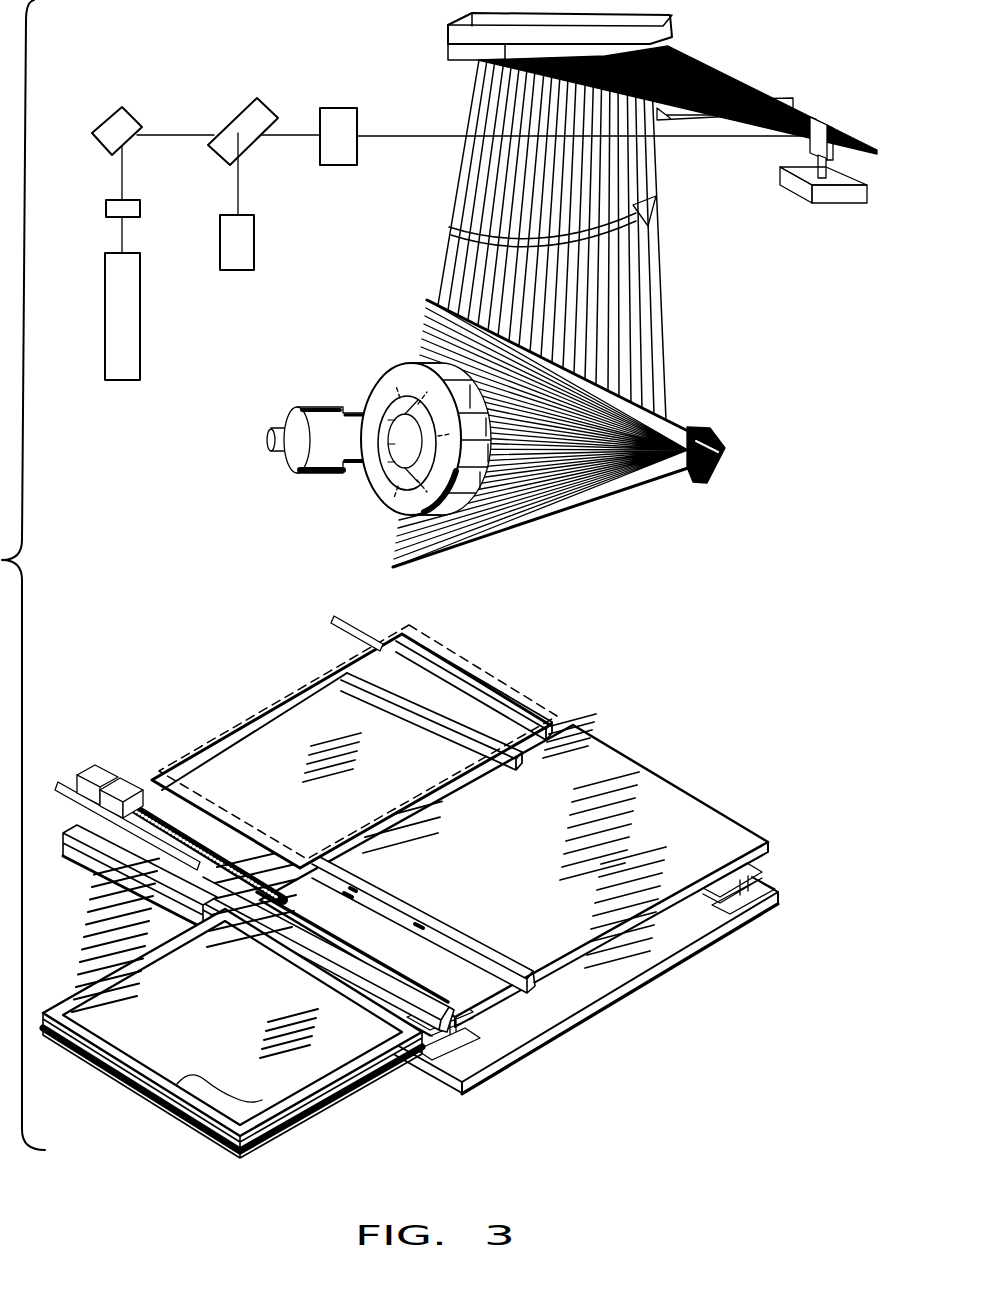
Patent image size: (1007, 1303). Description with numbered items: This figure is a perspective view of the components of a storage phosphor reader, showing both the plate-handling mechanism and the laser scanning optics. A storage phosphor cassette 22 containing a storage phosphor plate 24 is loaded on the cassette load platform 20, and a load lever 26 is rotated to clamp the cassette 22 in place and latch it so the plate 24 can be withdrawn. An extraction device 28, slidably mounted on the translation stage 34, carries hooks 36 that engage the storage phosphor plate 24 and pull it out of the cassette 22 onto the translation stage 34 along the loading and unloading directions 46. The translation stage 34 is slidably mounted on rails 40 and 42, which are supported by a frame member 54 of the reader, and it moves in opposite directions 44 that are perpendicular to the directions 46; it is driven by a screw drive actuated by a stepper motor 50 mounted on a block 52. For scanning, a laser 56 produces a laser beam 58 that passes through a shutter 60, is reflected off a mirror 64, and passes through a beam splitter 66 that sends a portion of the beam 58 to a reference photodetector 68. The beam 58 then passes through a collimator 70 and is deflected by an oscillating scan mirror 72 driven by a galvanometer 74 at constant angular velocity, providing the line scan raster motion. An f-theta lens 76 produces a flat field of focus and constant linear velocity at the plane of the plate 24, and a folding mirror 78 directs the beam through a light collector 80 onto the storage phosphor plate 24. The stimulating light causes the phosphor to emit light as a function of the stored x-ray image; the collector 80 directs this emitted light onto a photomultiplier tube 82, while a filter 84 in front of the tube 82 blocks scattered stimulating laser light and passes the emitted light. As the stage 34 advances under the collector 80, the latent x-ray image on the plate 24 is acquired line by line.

The cassette load platform 20 is at (347, 1075).
The storage phosphor cassette 22 is at (68, 996).
The storage phosphor plate 24 is at (222, 1085).
The load lever 26 is at (333, 968).
The extraction device 28 is at (489, 938).
The translation stage 34 is at (673, 782).
The hooks 36 is at (350, 897).
The rail 40 is at (372, 640).
The rail 42 is at (57, 800).
The directions of stage movement 44 is at (620, 687).
The directions of loading and unloading 46 is at (267, 880).
The stepper motor 50 is at (92, 768).
The block 52 is at (140, 778).
The frame member 54 is at (745, 925).
The laser 56 is at (105, 342).
The laser beam 58 is at (122, 238).
The shutter 60 is at (106, 208).
The mirror 64 is at (96, 124).
The beam splitter 66 is at (230, 122).
The reference photodetector 68 is at (254, 242).
The collimator 70 is at (357, 128).
The oscillating scan mirror 72 is at (872, 148).
The galvanometer 74 is at (842, 207).
The f-theta lens 76 is at (774, 98).
The folding mirror 78 is at (448, 46).
The light collector 80 is at (668, 405).
The photomultiplier tube 82 is at (402, 365).
The filter 84 is at (502, 490).